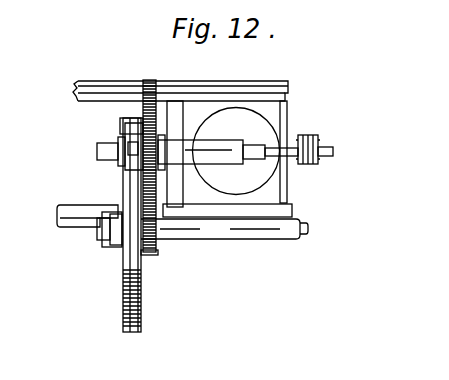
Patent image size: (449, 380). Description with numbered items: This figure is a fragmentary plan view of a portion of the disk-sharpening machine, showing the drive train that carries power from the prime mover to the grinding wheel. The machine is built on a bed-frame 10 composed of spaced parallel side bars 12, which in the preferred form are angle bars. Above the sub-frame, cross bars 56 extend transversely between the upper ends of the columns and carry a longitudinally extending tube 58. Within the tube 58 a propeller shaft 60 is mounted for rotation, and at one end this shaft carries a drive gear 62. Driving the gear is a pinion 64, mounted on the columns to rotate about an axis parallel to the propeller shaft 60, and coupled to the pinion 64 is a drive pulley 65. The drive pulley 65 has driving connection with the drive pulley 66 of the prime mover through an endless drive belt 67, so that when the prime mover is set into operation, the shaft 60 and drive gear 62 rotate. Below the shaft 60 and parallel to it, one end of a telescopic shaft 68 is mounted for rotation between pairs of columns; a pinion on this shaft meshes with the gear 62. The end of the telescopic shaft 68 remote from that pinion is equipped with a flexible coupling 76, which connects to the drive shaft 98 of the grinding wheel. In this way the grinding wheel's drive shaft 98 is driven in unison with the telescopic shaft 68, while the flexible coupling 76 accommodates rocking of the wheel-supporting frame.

The bed-frame 10 is at (56, 229).
The side bars 12 is at (75, 228).
The cross bars 56 is at (173, 103).
The tube 58 is at (222, 152).
The propeller shaft 60 is at (252, 157).
The drive gear 62 is at (145, 79).
The pinion 64 is at (150, 257).
The drive pulley 65 is at (142, 312).
The drive pulley 66 is at (118, 138).
The endless drive belt 67 is at (141, 302).
The telescopic shaft 68 is at (285, 153).
The flexible coupling 76 is at (320, 160).
The drive shaft 98 is at (320, 138).